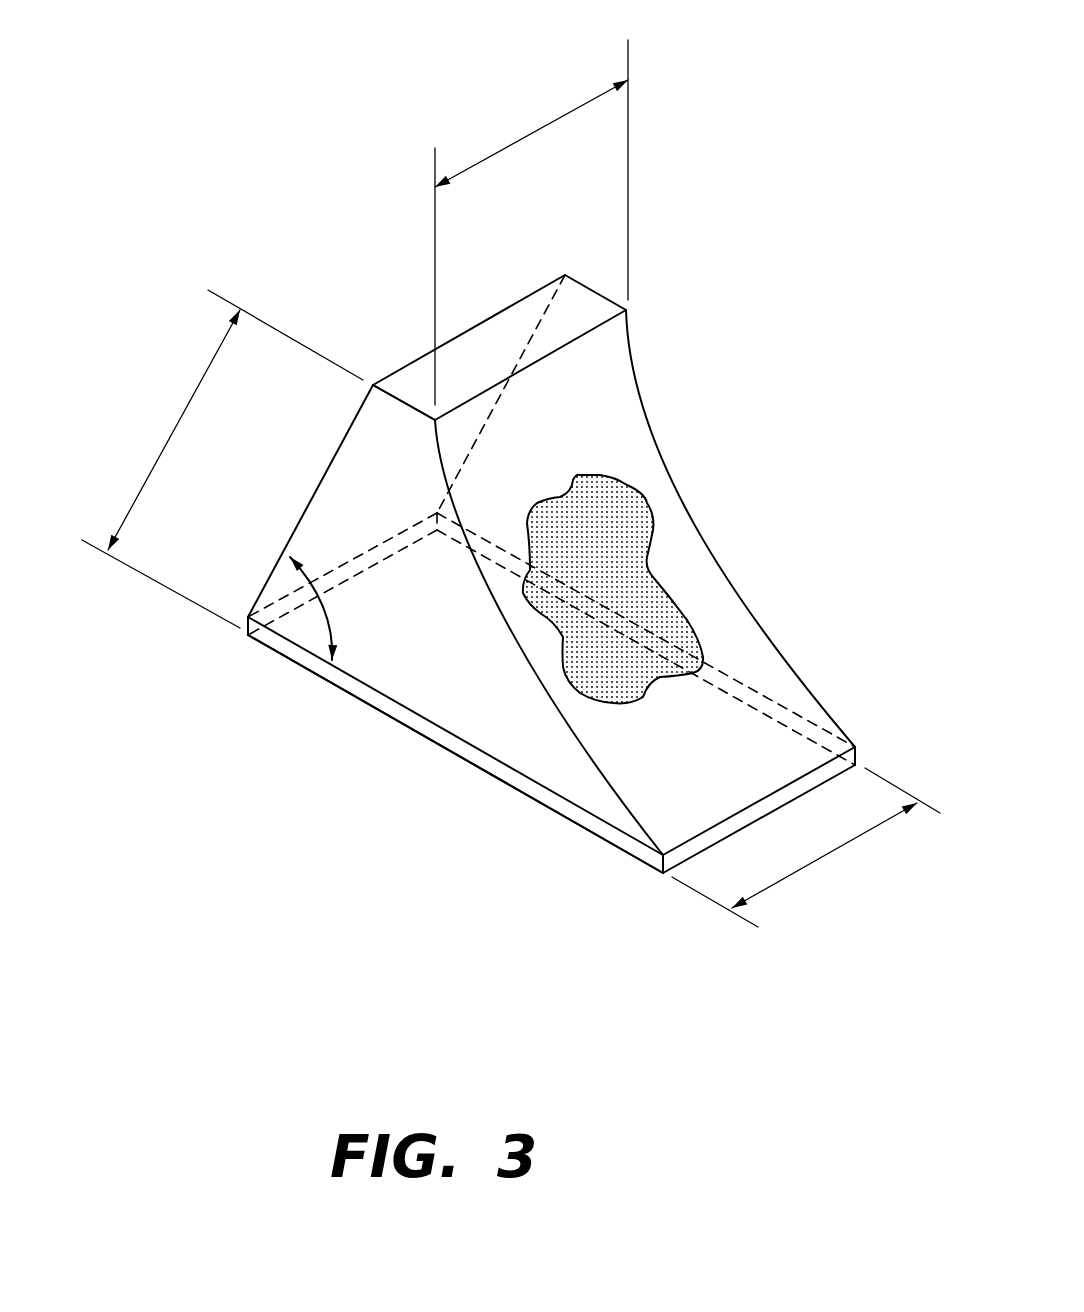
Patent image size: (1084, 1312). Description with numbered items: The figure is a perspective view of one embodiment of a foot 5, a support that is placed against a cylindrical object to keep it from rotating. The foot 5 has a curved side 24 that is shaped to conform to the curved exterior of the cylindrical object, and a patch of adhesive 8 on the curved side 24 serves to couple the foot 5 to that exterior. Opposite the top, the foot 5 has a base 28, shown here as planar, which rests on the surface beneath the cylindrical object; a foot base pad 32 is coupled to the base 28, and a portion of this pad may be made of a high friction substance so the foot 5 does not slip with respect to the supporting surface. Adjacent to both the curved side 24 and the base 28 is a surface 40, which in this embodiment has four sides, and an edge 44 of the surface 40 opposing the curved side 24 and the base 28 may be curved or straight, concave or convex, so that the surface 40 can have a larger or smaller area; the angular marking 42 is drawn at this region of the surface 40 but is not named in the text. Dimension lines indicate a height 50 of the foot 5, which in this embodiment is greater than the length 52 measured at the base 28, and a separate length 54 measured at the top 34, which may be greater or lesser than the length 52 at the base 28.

The foot 5 is at (705, 342).
The adhesive 8 is at (665, 620).
The curved side 24 is at (645, 452).
The base 28 is at (403, 843).
The foot base pad 32 is at (592, 825).
The top 34 is at (408, 375).
The surface 40 is at (313, 528).
The angle of side face 42 is at (318, 617).
The edge 44 is at (405, 405).
The height 50 is at (183, 410).
The length 52 is at (822, 860).
The length 54 is at (557, 118).